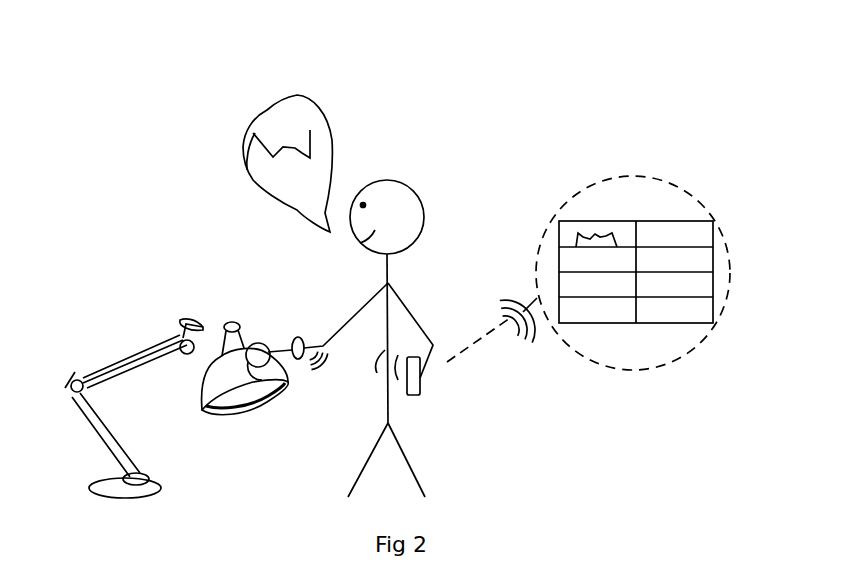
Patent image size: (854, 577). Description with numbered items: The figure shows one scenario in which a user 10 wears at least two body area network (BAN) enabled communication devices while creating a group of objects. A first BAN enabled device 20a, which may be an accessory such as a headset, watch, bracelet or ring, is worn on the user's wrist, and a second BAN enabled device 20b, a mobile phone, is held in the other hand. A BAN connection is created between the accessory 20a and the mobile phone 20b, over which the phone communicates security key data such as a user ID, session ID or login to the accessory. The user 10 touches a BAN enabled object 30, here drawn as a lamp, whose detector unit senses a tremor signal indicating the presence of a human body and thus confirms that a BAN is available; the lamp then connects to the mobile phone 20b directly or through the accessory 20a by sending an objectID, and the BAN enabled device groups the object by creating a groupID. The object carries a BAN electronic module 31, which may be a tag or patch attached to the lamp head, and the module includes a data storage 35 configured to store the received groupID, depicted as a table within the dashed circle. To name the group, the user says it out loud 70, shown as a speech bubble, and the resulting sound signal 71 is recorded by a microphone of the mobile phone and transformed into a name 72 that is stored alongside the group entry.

The user 10 is at (352, 328).
The first BAN enabled device 20a is at (298, 337).
The second BAN enabled device 20b is at (430, 391).
The BAN enabled object 30 is at (176, 362).
The BAN electronic module 31 is at (240, 413).
The data storage 35 is at (650, 273).
The saying out loud 70 is at (313, 100).
The sound signal 71 is at (597, 232).
The name 72 is at (684, 237).